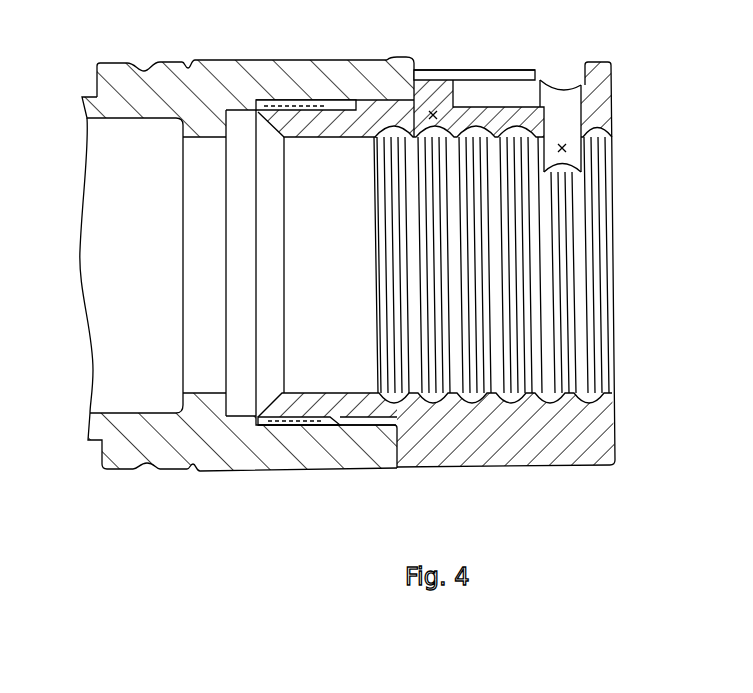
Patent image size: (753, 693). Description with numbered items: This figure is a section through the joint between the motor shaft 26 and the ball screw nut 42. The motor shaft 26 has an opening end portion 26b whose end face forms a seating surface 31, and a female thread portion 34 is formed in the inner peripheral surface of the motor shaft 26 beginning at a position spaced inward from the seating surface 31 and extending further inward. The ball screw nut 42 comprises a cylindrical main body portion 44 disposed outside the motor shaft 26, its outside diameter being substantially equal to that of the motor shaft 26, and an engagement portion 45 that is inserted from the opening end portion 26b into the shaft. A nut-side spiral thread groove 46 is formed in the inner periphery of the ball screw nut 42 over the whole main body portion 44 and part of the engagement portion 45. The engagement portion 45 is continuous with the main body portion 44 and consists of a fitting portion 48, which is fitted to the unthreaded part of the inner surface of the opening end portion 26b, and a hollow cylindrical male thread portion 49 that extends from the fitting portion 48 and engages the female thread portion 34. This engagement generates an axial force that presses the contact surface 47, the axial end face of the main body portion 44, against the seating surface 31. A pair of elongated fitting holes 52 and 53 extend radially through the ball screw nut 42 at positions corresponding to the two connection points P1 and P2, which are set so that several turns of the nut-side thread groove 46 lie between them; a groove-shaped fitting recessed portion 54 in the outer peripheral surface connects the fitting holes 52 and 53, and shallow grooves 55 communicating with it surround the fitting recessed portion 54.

The motor shaft 26 is at (84, 97).
The opening end portion 26b is at (303, 73).
The seating surface 31 is at (392, 60).
The female thread portion 34 is at (256, 124).
The ball screw nut 42 is at (607, 62).
The main body portion 44 is at (446, 460).
The engagement portion 45 is at (380, 505).
The nut-side spiral thread groove 46 is at (590, 388).
The contact surface 47 is at (387, 100).
The fitting portion 48 is at (360, 424).
The male thread portion 49 is at (287, 424).
The fitting hole 52 is at (574, 93).
The fitting hole 53 is at (424, 80).
The fitting recessed portion 54 is at (516, 106).
The shallow grooves 55 is at (492, 79).
The connection point P1 is at (568, 150).
The connection point P2 is at (437, 113).